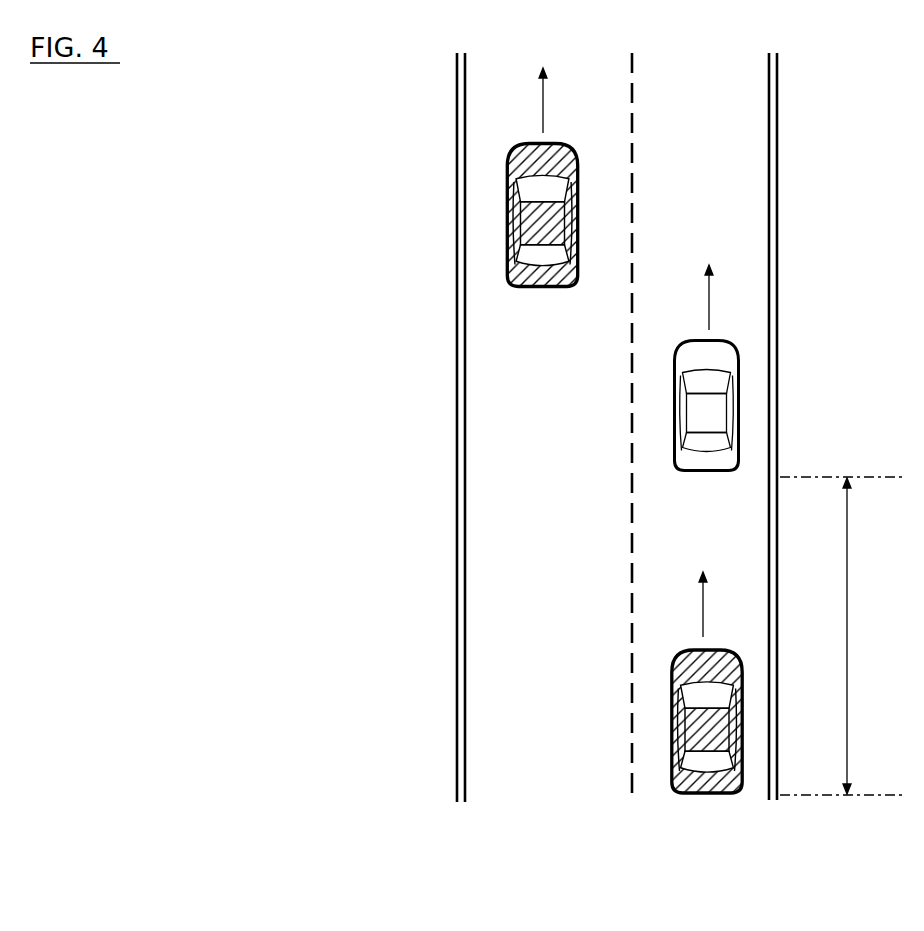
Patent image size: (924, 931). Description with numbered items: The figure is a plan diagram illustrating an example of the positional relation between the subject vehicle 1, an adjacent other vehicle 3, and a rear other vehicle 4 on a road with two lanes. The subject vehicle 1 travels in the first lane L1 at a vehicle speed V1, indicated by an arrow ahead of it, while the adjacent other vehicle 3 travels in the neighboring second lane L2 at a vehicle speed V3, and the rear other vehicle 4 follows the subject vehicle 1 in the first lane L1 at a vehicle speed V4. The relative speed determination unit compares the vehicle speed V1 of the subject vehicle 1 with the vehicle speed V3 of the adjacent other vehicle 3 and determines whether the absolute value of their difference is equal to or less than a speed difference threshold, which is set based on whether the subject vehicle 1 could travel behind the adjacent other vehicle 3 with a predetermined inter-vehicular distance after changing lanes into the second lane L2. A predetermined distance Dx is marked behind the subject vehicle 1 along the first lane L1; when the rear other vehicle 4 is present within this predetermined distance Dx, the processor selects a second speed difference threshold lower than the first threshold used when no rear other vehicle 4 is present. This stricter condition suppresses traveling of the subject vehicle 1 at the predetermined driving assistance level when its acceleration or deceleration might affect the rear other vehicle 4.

The subject vehicle 1 is at (747, 370).
The adjacent other vehicle 3 is at (510, 232).
The rear other vehicle 4 is at (672, 717).
The first lane L1 is at (755, 778).
The second lane L2 is at (530, 773).
The vehicle speed of the subject vehicle V1 is at (733, 297).
The vehicle speed of the adjacent other vehicle V3 is at (568, 100).
The vehicle speed of the rear other vehicle V4 is at (727, 604).
The predetermined distance Dx is at (842, 636).